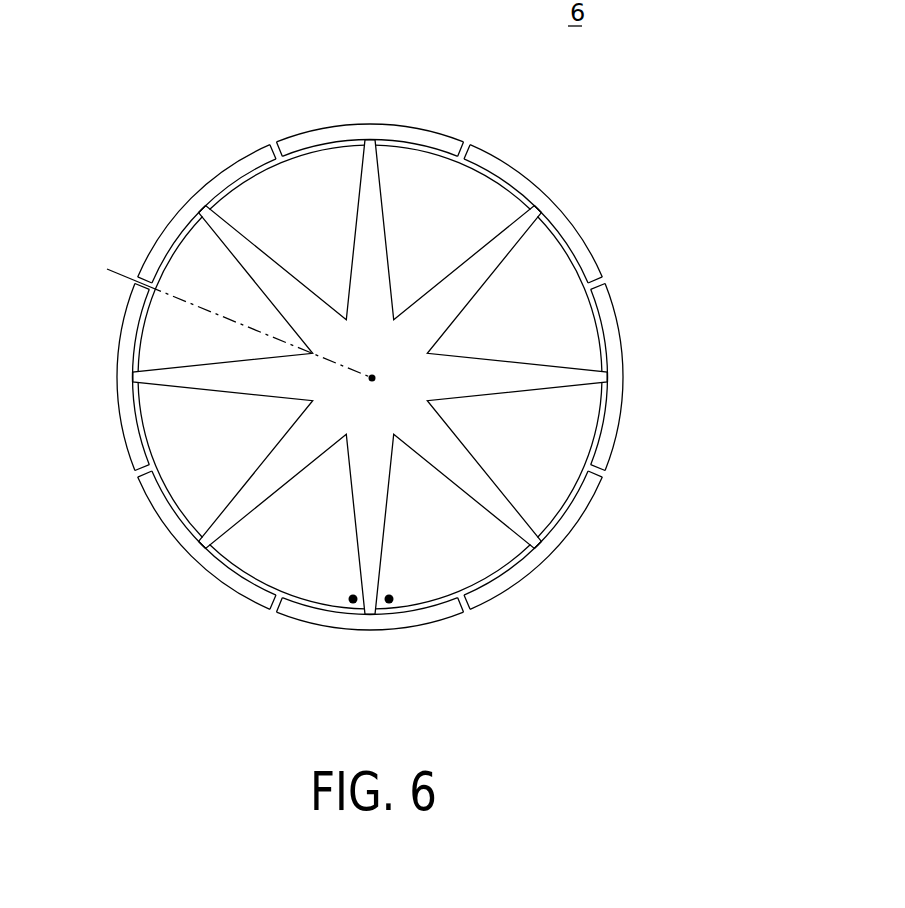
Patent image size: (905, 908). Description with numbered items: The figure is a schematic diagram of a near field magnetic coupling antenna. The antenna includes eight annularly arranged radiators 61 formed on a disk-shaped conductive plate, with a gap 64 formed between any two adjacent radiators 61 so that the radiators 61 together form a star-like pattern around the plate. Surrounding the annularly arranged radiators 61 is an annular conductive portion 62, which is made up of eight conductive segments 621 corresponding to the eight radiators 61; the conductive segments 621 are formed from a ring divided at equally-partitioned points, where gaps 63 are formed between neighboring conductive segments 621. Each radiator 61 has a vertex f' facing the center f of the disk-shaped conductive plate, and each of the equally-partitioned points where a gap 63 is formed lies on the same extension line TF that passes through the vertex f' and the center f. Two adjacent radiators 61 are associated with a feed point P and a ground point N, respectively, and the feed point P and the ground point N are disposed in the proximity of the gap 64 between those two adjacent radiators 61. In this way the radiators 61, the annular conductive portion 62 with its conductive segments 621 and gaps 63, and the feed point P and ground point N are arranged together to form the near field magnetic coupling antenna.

The radiator 61 is at (317, 235).
The annular conductive portion 62 is at (422, 377).
The conductive segment 621 is at (583, 253).
The gap 63 is at (276, 150).
The gap 64 is at (371, 139).
The extension line TF is at (122, 278).
The center f is at (380, 380).
The vertex f' is at (326, 344).
The feed point P is at (350, 583).
The ground point N is at (396, 583).